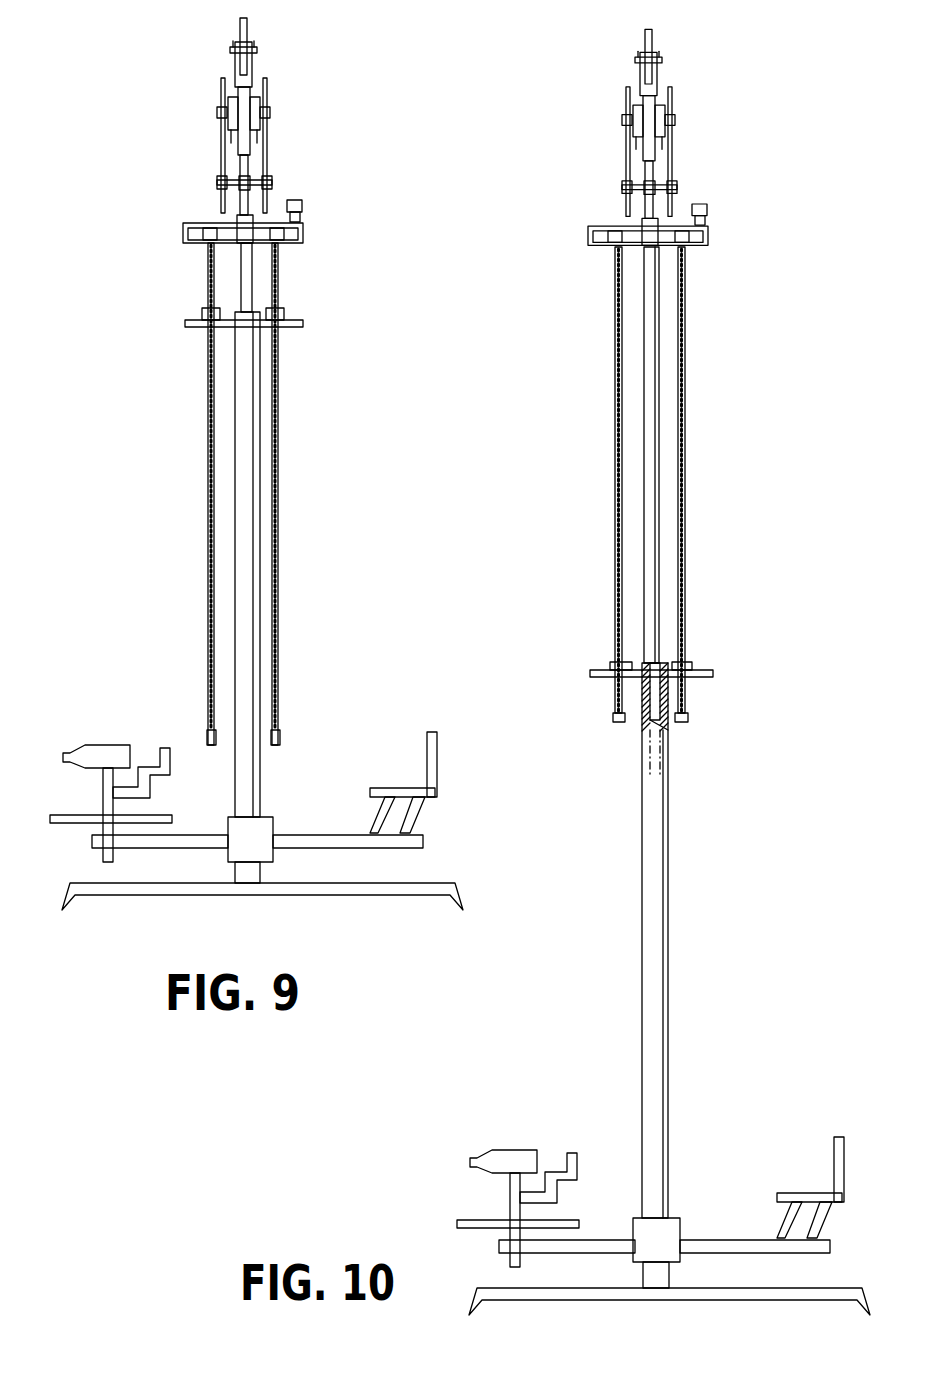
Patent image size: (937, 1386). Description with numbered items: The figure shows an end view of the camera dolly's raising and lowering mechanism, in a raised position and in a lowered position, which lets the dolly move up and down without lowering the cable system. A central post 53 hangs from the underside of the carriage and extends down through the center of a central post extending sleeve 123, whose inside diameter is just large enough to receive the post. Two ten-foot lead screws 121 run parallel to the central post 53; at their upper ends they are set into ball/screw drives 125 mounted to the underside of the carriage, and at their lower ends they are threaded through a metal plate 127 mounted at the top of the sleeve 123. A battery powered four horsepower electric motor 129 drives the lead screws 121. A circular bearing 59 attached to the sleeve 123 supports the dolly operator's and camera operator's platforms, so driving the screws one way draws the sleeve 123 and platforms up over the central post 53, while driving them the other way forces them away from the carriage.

In FIG. 9, the central post 53 is at (256, 280).
In FIG. 10, the central post 53 is at (660, 475).
In FIG. 9, the circular bearing 59 is at (272, 822).
In FIG. 10, the circular bearing 59 is at (680, 1220).
In FIG. 9, the lead screws 121 is at (208, 453).
In FIG. 10, the lead screws 121 is at (615, 388).
In FIG. 9, the central post extending sleeve 123 is at (262, 770).
In FIG. 10, the central post extending sleeve 123 is at (670, 875).
In FIG. 9, the ball/screw drives 125 is at (206, 245).
In FIG. 10, the ball/screw drives 125 is at (610, 247).
In FIG. 9, the metal plate 127 is at (303, 322).
In FIG. 10, the metal plate 127 is at (713, 672).
In FIG. 9, the electric motor 129 is at (301, 199).
In FIG. 10, the electric motor 129 is at (705, 202).